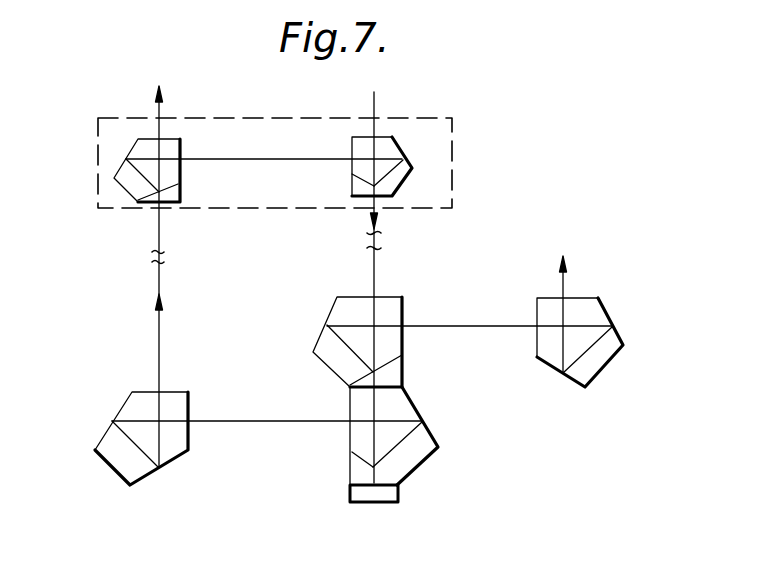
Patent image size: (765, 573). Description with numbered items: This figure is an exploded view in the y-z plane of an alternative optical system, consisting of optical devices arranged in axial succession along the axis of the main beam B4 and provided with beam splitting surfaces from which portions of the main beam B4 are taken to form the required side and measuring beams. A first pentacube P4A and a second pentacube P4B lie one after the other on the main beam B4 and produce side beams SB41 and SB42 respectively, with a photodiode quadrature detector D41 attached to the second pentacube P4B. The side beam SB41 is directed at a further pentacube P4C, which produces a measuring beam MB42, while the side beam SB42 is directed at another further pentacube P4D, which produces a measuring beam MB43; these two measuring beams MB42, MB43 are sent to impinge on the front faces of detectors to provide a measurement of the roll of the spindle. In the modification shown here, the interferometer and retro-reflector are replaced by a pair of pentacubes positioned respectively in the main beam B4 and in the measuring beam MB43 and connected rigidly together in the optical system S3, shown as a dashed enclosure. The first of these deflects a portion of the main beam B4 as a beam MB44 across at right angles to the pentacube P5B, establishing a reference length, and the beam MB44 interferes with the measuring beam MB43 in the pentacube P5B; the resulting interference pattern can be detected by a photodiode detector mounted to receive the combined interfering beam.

The pentacube P5B is at (138, 139).
The beam MB44 is at (264, 159).
The optical system S3 is at (453, 150).
The main beam B4 is at (374, 255).
The measuring beam MB42 is at (567, 292).
The side beam SB41 is at (462, 323).
The first pentacube P4A is at (403, 353).
The pentacube P4C is at (625, 345).
The measuring beam MB43 is at (158, 367).
The side beam SB42 is at (298, 418).
The pentacube P4D is at (147, 475).
The second pentacube P4B is at (428, 460).
The photodiode quadrature detector D41 is at (400, 492).